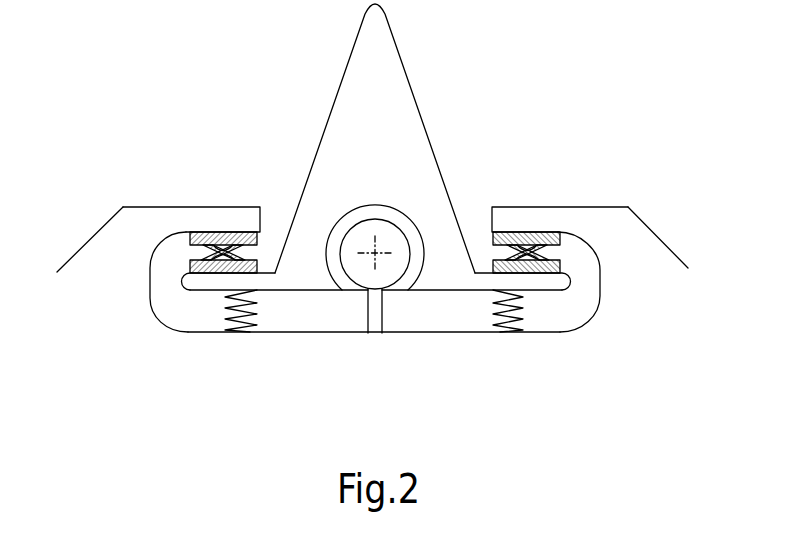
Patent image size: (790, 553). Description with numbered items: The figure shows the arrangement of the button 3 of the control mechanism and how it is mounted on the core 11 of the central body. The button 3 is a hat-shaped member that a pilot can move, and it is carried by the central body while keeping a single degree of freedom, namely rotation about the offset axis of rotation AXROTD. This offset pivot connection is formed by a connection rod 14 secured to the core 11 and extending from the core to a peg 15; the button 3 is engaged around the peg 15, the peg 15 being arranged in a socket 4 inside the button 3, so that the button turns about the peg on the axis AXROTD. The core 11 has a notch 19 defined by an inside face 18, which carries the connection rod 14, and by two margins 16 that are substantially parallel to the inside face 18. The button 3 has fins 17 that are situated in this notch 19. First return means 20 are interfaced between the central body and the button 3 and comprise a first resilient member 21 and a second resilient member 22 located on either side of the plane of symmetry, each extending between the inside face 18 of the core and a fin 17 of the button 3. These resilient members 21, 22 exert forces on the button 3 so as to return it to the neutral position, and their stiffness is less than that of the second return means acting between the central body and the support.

The button 3 is at (437, 90).
The socket 4 is at (400, 218).
The core 11 is at (140, 230).
The connection rod 14 is at (367, 315).
The peg 15 is at (357, 277).
The margins 16 is at (204, 207).
The fins 17 is at (188, 292).
The inside face 18 is at (447, 330).
The notch 19 is at (472, 322).
The first return means 20 is at (422, 361).
The first resilient member 21 is at (260, 305).
The second resilient member 22 is at (530, 308).
The offset axis of rotation AXROTD is at (377, 257).